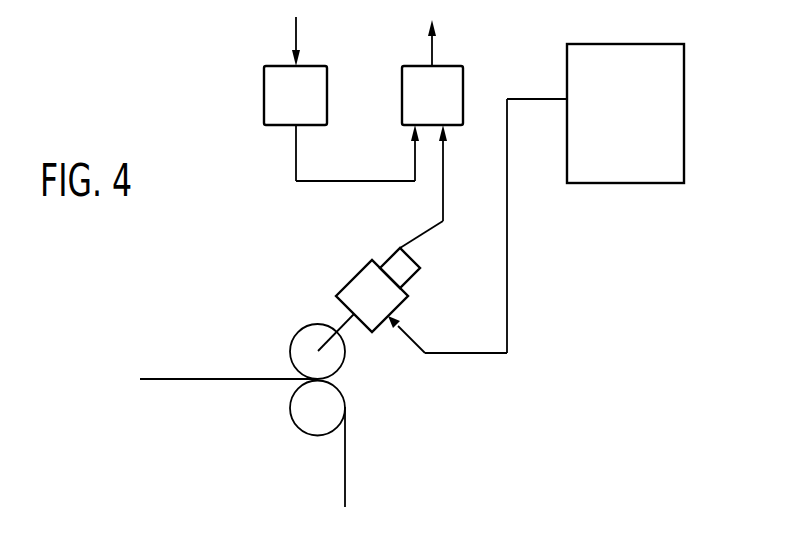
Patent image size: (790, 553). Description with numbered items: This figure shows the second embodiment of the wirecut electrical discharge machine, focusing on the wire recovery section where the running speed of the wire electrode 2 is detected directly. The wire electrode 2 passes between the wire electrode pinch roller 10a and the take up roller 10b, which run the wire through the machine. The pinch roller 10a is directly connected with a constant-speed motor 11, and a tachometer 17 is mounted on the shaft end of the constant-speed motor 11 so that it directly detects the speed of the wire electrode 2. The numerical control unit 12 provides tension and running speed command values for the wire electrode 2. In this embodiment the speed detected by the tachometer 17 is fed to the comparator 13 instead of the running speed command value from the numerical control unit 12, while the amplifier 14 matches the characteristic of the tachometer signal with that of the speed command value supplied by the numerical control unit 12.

The wire electrode 2 is at (207, 380).
The wire electrode pinch roller 10a is at (298, 333).
The take up roller 10b is at (310, 435).
The constant-speed motor 11 is at (355, 275).
The numerical control unit 12 is at (615, 183).
The comparator 13 is at (402, 90).
The amplifier 14 is at (262, 88).
The tachometer 17 is at (418, 275).